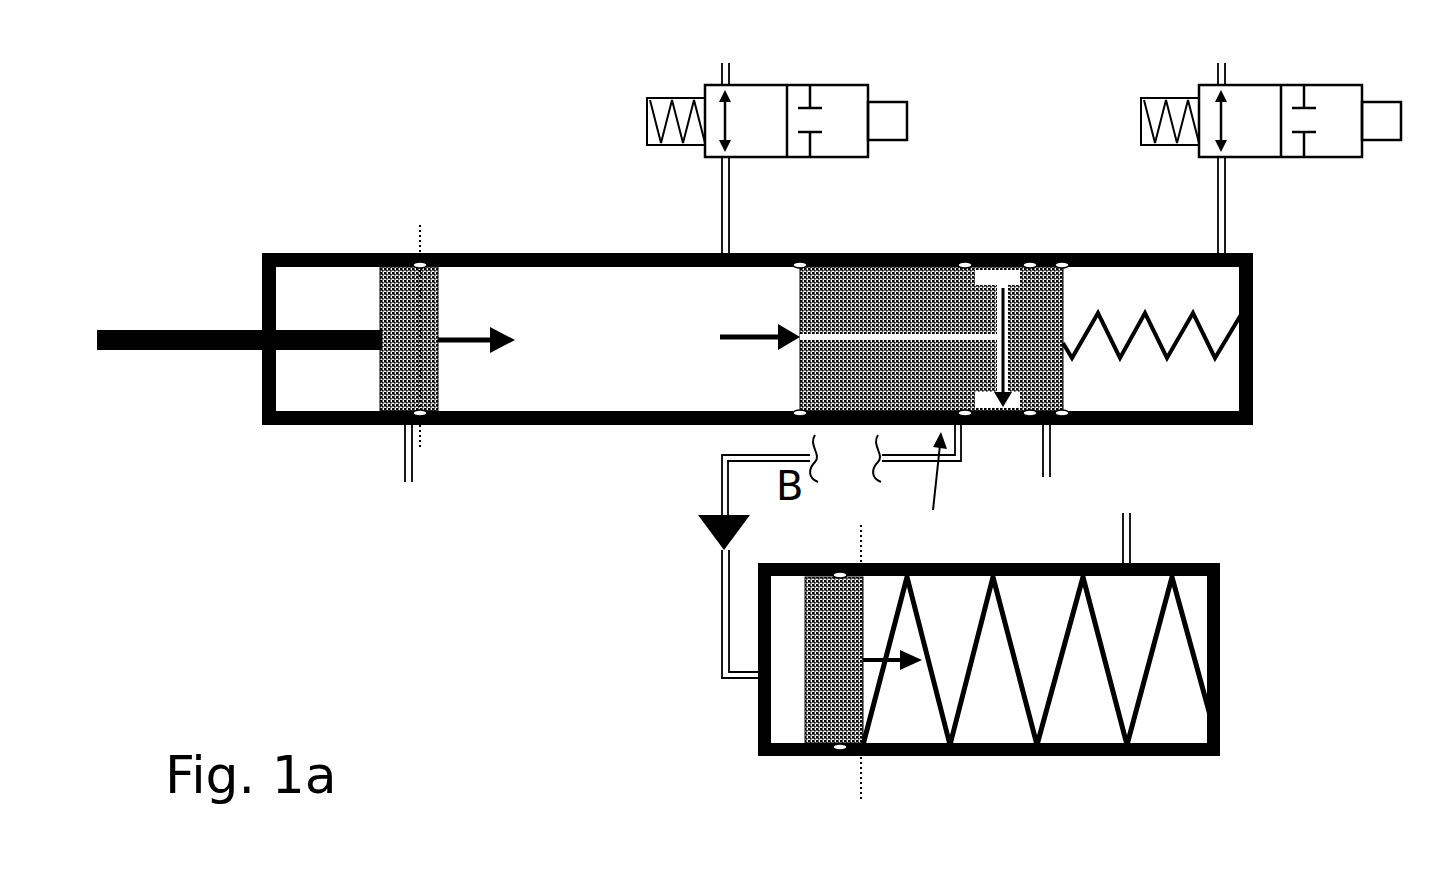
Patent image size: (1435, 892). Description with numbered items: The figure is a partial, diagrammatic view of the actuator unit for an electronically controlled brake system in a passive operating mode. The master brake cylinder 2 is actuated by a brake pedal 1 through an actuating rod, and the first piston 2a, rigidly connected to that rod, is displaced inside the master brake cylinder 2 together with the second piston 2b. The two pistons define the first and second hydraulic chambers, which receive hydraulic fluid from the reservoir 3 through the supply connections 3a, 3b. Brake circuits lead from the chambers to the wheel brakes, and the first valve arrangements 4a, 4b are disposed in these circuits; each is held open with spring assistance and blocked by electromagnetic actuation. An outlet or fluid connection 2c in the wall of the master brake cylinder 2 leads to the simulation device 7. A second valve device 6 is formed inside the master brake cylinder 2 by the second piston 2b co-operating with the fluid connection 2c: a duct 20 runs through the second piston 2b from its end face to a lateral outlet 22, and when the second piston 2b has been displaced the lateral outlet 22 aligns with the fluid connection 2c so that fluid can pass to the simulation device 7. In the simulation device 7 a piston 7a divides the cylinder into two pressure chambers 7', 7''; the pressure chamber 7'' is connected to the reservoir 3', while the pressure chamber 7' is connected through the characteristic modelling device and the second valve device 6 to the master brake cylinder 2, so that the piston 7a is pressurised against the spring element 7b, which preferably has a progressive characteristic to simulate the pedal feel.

The brake pedal 1 is at (188, 350).
The master brake cylinder 2 is at (530, 425).
The first piston 2a is at (393, 257).
The second piston 2b is at (922, 264).
The outlet or fluid connection 2c is at (963, 450).
The reservoir 3 is at (727, 484).
The supply connection 3a is at (405, 455).
The supply connection 3b is at (1052, 436).
The reservoir 3' is at (1140, 510).
The first valve arrangement 4a is at (873, 157).
The first valve arrangement 4b is at (1368, 157).
The second valve device 6 is at (934, 493).
The simulation device 7 is at (989, 659).
The pressure chamber 7' is at (708, 756).
The piston 7a is at (810, 757).
The spring element 7b is at (1023, 718).
The pressure chamber 7'' is at (1211, 801).
The duct 20 is at (799, 340).
The lateral outlet 22 is at (995, 423).